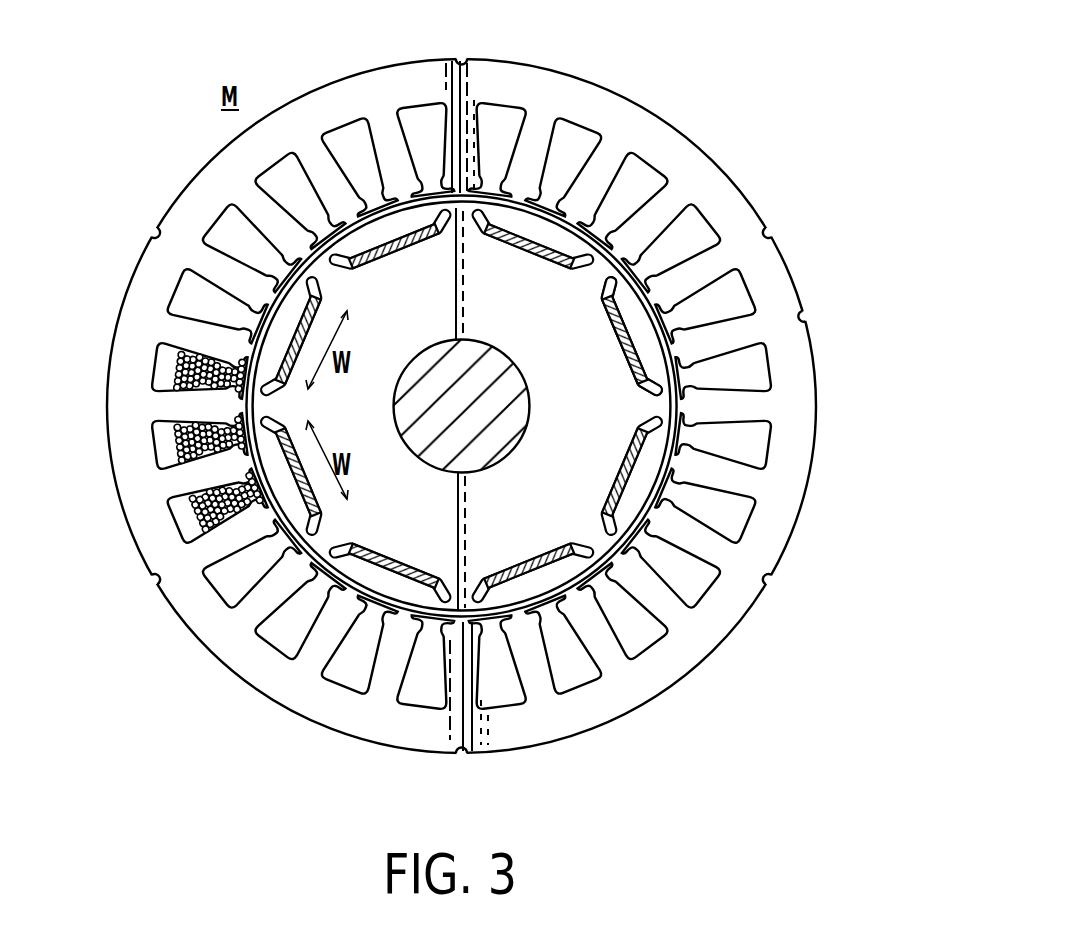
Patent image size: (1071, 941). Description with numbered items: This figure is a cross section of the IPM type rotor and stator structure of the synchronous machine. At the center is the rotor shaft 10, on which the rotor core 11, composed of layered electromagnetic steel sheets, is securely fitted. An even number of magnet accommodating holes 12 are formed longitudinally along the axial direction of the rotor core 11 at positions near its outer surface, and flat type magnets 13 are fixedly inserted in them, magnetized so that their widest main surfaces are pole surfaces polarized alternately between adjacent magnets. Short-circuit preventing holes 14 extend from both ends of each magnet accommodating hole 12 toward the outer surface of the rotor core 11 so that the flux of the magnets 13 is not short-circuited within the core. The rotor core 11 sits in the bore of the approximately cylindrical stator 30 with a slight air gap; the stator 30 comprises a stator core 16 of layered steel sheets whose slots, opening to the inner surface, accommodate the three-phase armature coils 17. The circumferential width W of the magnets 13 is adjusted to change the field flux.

The rotor shaft 10 is at (514, 408).
The rotor core 11 is at (565, 352).
The magnet accommodating hole 12 is at (590, 538).
The flat type magnet 13 is at (633, 447).
The short-circuit preventing hole 14 is at (608, 291).
The stator core 16 is at (710, 183).
The three-phase armature coil 17 is at (200, 460).
The stator 30 is at (684, 121).